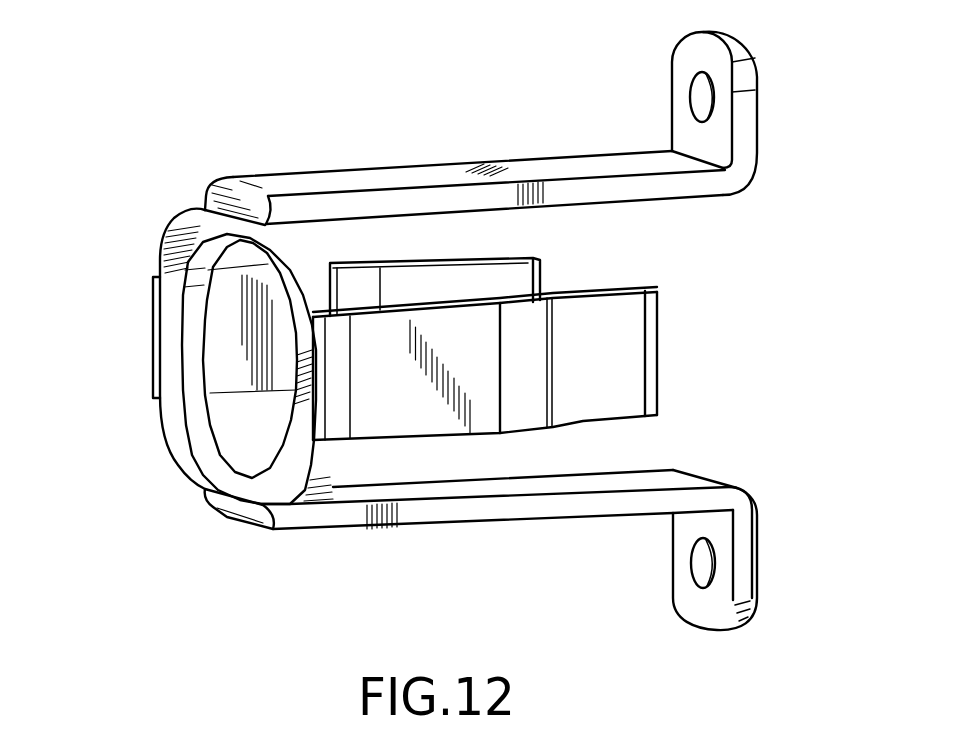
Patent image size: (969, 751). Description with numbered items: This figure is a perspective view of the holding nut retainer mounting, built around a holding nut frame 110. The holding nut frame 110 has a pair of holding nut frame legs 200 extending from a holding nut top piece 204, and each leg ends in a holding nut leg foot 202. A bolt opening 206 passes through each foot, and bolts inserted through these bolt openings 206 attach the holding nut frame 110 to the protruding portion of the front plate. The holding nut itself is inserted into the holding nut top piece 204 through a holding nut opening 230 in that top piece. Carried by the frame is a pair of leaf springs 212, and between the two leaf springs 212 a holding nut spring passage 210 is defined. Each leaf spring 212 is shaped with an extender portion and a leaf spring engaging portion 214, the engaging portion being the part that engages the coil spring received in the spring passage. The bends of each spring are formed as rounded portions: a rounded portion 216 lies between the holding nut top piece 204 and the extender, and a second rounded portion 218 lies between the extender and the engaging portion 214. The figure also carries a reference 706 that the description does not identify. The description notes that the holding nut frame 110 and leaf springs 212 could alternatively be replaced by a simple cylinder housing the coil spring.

The holding nut frame 110 is at (446, 334).
The holding nut frame leg 200 is at (638, 187).
The holding nut leg foot 202 is at (715, 138).
The holding nut top piece 204 is at (193, 462).
The bolt opening 206 is at (698, 92).
The holding nut spring passage 210 is at (530, 290).
The leaf spring 212 is at (403, 398).
The leaf spring engaging portion 214 is at (633, 382).
The rounded portion 216 is at (337, 343).
The rounded portion 218 is at (515, 403).
The holding nut opening 230 is at (250, 310).
The aperture 706 is at (690, 573).